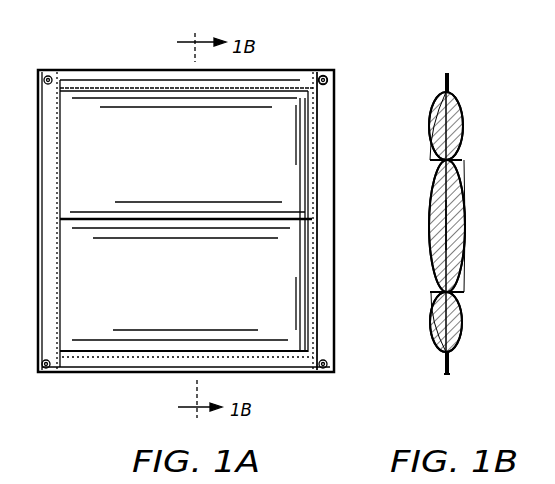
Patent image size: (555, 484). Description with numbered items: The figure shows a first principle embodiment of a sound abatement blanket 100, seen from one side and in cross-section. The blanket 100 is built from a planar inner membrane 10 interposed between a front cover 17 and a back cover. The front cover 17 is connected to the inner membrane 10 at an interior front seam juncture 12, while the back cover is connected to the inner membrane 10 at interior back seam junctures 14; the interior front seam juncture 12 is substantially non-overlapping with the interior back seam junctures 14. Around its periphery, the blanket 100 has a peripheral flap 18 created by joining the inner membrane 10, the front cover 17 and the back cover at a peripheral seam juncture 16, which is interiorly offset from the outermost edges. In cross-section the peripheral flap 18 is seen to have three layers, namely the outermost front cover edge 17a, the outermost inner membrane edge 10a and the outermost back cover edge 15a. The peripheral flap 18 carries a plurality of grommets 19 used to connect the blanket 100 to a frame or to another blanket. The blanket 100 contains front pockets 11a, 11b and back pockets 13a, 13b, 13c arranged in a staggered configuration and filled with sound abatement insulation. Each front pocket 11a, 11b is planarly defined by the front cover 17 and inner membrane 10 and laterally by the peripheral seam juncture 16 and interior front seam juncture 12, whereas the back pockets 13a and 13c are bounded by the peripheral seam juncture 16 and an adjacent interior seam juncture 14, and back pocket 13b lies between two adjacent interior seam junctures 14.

In FIG. 1A, the sound abatement blanket 100 is at (266, 60).
In FIG. 1B, the inner membrane 10 is at (432, 284).
In FIG. 1B, the outermost inner membrane edge 10a is at (455, 348).
In FIG. 1A, the front pocket 11a is at (280, 145).
In FIG. 1B, the front pocket 11a is at (433, 194).
In FIG. 1A, the front pocket 11b is at (293, 322).
In FIG. 1B, the front pocket 11b is at (431, 309).
In FIG. 1A, the interior front seam juncture 12 is at (296, 218).
In FIG. 1B, the interior front seam juncture 12 is at (430, 225).
In FIG. 1B, the back pocket 13a is at (460, 132).
In FIG. 1B, the back pocket 13b is at (548, 214).
In FIG. 1B, the back pocket 13c is at (476, 322).
In FIG. 1B, the interior back seam juncture 14 is at (450, 160).
In FIG. 1B, the outermost back cover edge 15a is at (450, 368).
In FIG. 1A, the peripheral seam juncture 16 is at (108, 90).
In FIG. 1B, the front cover 17 is at (431, 248).
In FIG. 1B, the outermost front cover edge 17a is at (446, 353).
In FIG. 1A, the peripheral flap 18 is at (322, 108).
In FIG. 1A, the grommets 19 is at (328, 80).